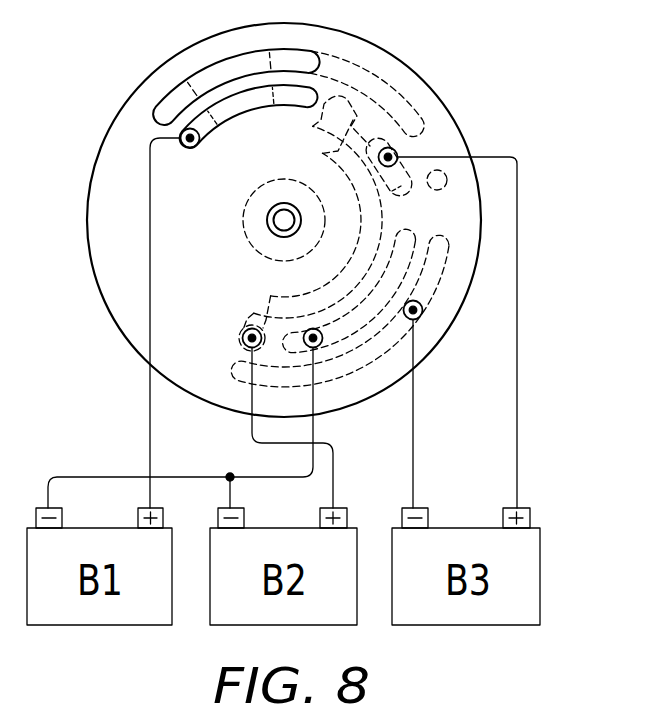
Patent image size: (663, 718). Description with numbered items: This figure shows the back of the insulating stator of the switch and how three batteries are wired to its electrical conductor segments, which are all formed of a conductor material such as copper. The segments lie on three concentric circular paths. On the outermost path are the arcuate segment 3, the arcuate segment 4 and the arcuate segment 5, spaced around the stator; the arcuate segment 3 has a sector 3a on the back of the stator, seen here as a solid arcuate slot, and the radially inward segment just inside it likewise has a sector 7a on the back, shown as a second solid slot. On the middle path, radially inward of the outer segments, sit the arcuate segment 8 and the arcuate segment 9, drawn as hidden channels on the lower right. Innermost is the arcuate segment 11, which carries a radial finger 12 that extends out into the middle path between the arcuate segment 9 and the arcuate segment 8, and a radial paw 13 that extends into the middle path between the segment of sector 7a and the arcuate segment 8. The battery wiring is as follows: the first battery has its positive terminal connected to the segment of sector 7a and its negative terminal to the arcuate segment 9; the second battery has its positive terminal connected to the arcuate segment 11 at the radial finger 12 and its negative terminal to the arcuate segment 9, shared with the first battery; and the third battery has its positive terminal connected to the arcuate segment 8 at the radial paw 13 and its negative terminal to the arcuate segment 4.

The arcuate segment 3 is at (370, 70).
The sector 3a is at (230, 72).
The sector 7a is at (233, 105).
The arcuate segment 4 is at (437, 284).
The arcuate segment 5 is at (439, 190).
The arcuate segment 8 is at (400, 183).
The arcuate segment 9 is at (393, 268).
The arcuate segment 11 is at (200, 203).
The radial finger 12 is at (241, 326).
The radial paw 13 is at (374, 167).